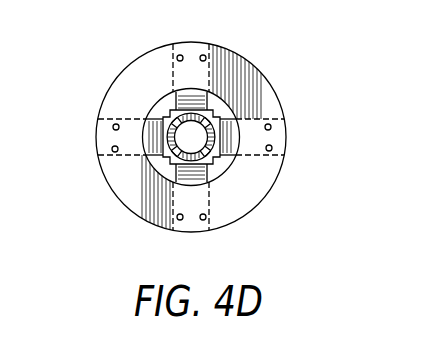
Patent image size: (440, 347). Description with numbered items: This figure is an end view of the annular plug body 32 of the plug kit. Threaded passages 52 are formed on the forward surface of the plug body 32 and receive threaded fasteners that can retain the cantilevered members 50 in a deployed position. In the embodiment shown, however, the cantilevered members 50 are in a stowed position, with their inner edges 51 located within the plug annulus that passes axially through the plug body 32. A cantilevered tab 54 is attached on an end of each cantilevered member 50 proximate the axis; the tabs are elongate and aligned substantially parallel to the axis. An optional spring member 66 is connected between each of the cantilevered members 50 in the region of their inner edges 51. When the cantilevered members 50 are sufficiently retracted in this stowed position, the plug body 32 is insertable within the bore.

The plug body 32 is at (253, 75).
The cantilevered member 50 is at (212, 173).
The inner edge 51 is at (162, 152).
The threaded passage 52 is at (112, 150).
The cantilevered tab 54 is at (218, 146).
The spring member 66 is at (217, 112).